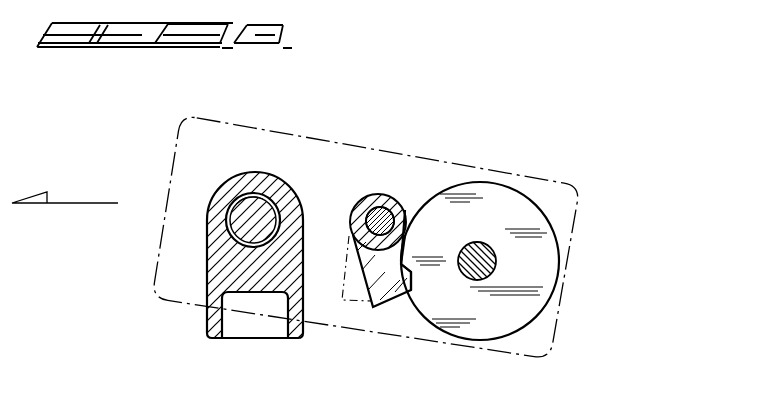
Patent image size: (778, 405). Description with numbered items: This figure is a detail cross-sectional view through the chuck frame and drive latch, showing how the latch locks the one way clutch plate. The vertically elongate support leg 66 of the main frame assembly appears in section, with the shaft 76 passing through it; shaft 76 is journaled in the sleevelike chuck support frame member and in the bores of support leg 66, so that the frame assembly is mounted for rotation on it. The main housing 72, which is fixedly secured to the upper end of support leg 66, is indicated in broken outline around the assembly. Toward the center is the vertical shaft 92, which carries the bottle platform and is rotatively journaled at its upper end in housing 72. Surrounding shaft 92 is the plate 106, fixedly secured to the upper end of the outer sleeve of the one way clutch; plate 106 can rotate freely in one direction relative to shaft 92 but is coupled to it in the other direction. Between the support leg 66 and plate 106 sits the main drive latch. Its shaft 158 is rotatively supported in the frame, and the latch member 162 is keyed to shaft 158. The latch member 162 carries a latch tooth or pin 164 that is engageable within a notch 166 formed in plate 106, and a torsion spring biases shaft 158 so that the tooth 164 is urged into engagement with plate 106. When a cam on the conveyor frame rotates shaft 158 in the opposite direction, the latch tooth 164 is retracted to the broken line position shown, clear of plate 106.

The main housing 72 is at (640, 187).
The support leg portion 66 is at (210, 327).
The shaft 76 is at (250, 222).
The shaft 158 is at (382, 213).
The latch member 162 is at (340, 360).
The latch tooth or pin 164 is at (385, 358).
The notch 166 is at (437, 240).
The plate 106 is at (597, 326).
The vertical shaft 92 is at (597, 261).